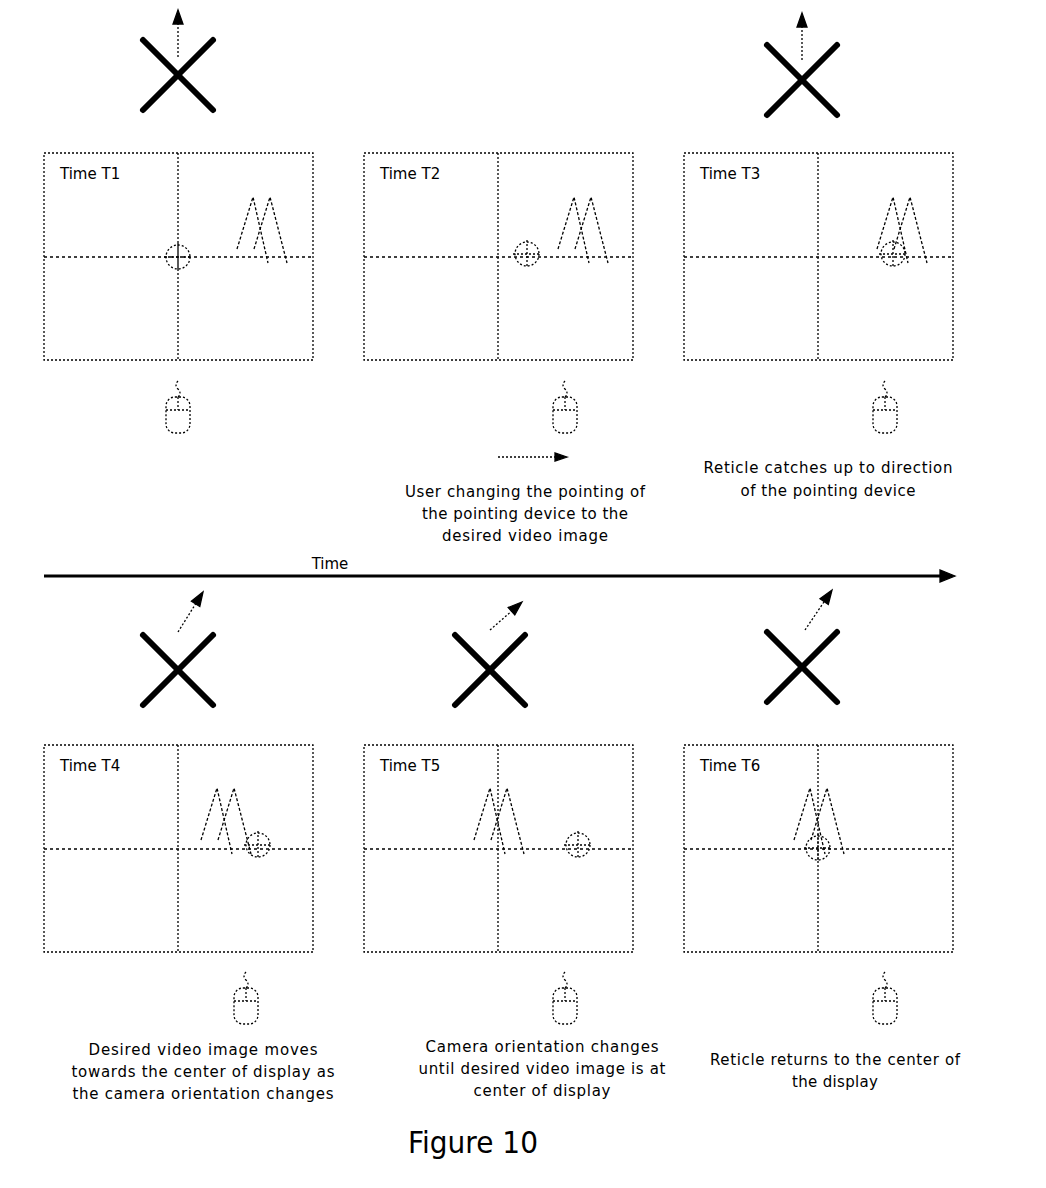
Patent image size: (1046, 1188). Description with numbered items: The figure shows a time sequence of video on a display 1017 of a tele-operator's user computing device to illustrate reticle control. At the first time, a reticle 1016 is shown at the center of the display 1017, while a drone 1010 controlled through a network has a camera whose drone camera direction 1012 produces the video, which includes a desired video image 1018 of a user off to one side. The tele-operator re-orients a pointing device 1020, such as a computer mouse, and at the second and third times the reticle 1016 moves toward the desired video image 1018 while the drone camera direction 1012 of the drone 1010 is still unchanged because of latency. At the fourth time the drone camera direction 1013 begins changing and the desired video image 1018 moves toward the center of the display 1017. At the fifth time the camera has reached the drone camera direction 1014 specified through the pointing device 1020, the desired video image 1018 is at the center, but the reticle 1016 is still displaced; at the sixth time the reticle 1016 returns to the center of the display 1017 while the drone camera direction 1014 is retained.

The drone 1010 is at (457, 379).
The drone camera direction 1012 is at (184, 26).
The drone camera direction 1013 is at (192, 612).
The drone camera direction 1014 is at (510, 617).
The reticle 1016 is at (153, 278).
The display 1017 is at (287, 337).
The desired video image 1018 is at (266, 182).
The pointing device 1020 is at (178, 443).